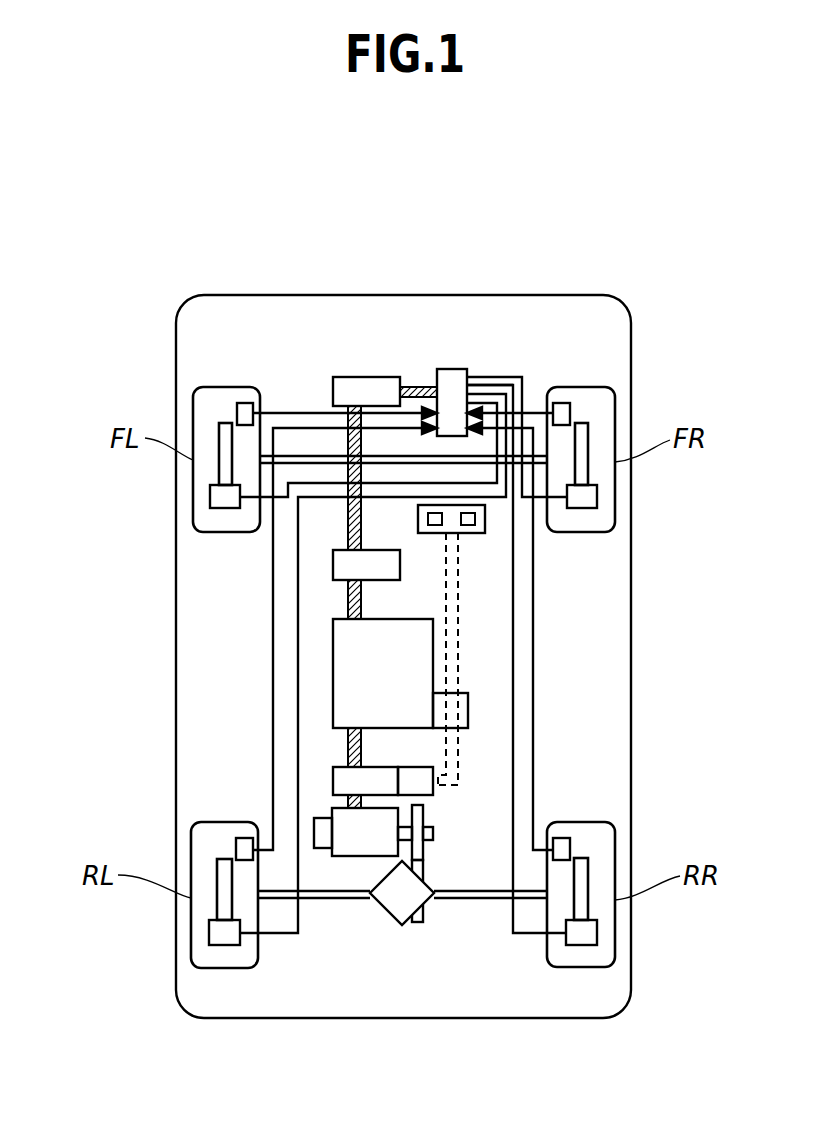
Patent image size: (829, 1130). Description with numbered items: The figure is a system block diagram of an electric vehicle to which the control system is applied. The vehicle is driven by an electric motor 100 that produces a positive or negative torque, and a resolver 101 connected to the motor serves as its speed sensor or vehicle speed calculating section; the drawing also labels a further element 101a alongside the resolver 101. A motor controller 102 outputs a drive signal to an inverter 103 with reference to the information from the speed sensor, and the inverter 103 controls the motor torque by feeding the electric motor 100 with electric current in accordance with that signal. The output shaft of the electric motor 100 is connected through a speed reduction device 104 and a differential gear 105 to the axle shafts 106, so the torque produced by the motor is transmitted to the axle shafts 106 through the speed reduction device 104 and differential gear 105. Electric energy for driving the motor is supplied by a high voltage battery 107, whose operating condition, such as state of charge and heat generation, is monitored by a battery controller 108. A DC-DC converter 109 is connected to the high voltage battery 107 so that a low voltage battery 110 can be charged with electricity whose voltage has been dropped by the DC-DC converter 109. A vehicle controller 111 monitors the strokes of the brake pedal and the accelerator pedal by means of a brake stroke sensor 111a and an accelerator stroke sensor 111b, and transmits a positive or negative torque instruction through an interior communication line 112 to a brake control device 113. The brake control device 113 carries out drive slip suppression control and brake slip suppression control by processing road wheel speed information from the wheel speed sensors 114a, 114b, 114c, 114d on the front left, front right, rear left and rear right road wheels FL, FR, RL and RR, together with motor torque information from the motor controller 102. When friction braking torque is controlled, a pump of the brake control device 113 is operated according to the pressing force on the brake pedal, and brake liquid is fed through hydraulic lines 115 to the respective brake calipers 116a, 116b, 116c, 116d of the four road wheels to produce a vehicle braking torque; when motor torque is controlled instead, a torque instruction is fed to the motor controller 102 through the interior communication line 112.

The electric motor 100 is at (340, 843).
The resolver 101 is at (314, 828).
The motor rotation shaft 101a is at (434, 833).
The motor controller 102 is at (433, 791).
The inverter 103 is at (333, 778).
The speed reduction device 104 is at (428, 843).
The differential gear 105 is at (400, 915).
The axle shafts 106 is at (350, 898).
The high voltage battery 107 is at (333, 676).
The battery controller 108 is at (462, 713).
The DC-DC converter 109 is at (333, 563).
The low voltage battery 110 is at (347, 377).
The vehicle controller 111 is at (485, 514).
The brake stroke sensor 111a is at (442, 521).
The accelerator stroke sensor 111b is at (475, 518).
The interior communication line 112 is at (458, 651).
The brake control device 113 is at (447, 369).
The wheel speed sensor 114a is at (237, 410).
The wheel speed sensor 114b is at (572, 412).
The wheel speed sensor 114c is at (236, 850).
The wheel speed sensor 114d is at (570, 849).
The hydraulic lines 115 is at (490, 385).
The brake caliper 116a is at (210, 495).
The brake caliper 116b is at (597, 497).
The brake caliper 116c is at (209, 930).
The brake caliper 116d is at (597, 934).